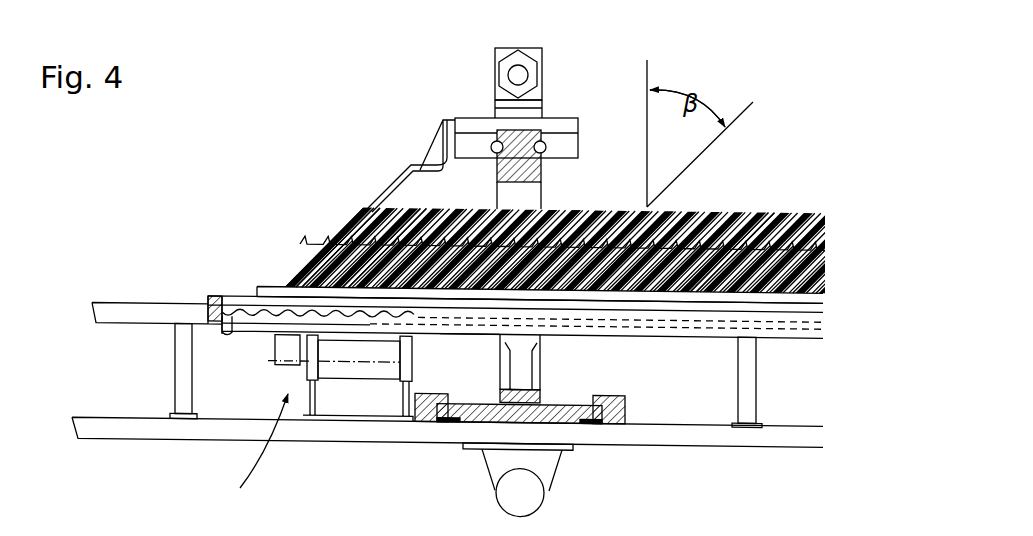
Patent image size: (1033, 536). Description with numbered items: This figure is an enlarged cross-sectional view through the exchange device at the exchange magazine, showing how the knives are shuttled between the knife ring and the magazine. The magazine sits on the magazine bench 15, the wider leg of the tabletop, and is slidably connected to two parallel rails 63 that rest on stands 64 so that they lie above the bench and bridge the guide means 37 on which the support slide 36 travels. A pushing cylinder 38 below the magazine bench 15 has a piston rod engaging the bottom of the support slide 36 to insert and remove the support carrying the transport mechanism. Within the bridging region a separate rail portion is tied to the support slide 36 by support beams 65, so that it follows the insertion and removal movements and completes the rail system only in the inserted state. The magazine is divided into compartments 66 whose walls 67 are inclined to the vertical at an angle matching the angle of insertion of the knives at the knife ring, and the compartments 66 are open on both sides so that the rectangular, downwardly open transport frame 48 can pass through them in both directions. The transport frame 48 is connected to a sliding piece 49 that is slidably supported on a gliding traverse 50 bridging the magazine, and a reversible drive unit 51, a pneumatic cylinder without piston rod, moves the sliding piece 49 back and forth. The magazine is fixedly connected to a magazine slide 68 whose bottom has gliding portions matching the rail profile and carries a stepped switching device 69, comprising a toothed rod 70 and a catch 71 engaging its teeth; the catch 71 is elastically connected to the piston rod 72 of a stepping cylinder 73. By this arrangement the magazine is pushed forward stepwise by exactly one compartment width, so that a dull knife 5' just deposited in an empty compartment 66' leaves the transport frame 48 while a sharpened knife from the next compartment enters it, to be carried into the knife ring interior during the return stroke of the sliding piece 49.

The magazine bench 15 is at (110, 420).
The support slide 36 is at (465, 413).
The guide means 37 is at (624, 400).
The pushing cylinder 38 is at (535, 497).
The transport frame 48 is at (397, 198).
The sliding piece 49 is at (558, 142).
The gliding traverse 50 is at (497, 140).
The reversible drive unit 51 is at (489, 55).
The dull knife 5' is at (323, 233).
The rails 63 is at (160, 304).
The stands 64 is at (750, 373).
The support beams 65 is at (521, 365).
The compartments 66 is at (742, 223).
The empty compartment 66' is at (338, 215).
The walls 67 is at (718, 208).
The magazine slide 68 is at (465, 300).
The stepped switching device 69 is at (250, 453).
The toothed rod 70 is at (256, 305).
The catch 71 is at (226, 335).
The piston rod 72 is at (286, 368).
The stepping cylinder 73 is at (372, 368).